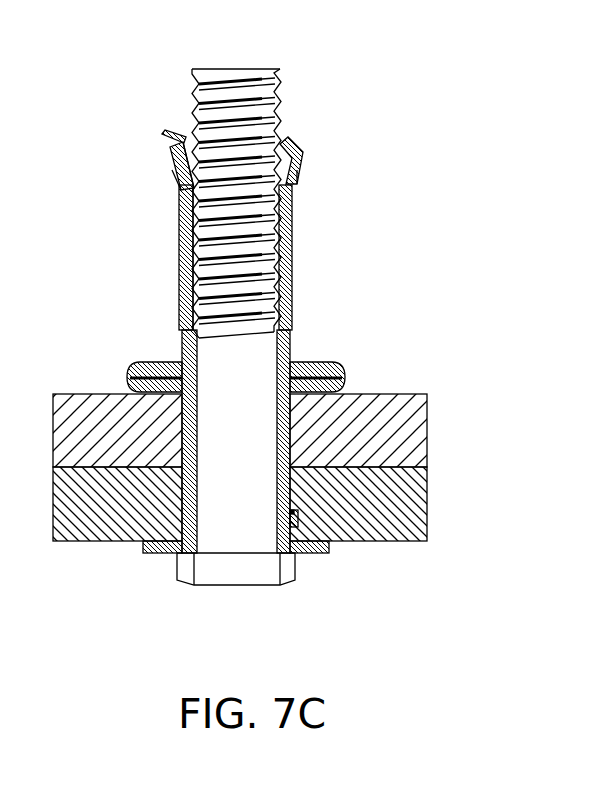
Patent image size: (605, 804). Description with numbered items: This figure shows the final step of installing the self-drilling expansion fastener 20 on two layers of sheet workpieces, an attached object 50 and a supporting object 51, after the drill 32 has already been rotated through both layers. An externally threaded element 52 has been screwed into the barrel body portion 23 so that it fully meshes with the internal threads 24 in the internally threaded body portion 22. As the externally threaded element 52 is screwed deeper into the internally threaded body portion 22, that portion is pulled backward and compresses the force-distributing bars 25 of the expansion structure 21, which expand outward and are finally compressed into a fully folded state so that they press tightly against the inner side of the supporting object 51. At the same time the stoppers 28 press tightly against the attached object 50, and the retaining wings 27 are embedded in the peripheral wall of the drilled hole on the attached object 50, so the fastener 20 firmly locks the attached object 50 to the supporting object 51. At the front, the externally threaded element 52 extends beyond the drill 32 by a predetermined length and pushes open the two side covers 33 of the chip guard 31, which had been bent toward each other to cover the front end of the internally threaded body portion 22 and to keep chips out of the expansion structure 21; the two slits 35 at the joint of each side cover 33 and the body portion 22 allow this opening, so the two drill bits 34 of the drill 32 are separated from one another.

The self-drilling expansion fastener 20 is at (393, 60).
The expansion structure 21 is at (387, 247).
The internally threaded body portion 22 is at (312, 240).
The barrel body portion 23 is at (312, 334).
The internal threads 24 is at (203, 238).
The force-distributing bars 25 is at (135, 364).
The retaining wings 27 is at (297, 514).
The stoppers 28 is at (153, 555).
The chip guard 31 is at (318, 136).
The drill 32 is at (178, 105).
The side covers 33 is at (172, 150).
The drill bits 34 is at (165, 132).
The slits 35 is at (172, 168).
The attached object 50 is at (78, 523).
The supporting object 51 is at (100, 400).
The externally threaded element 52 is at (233, 68).